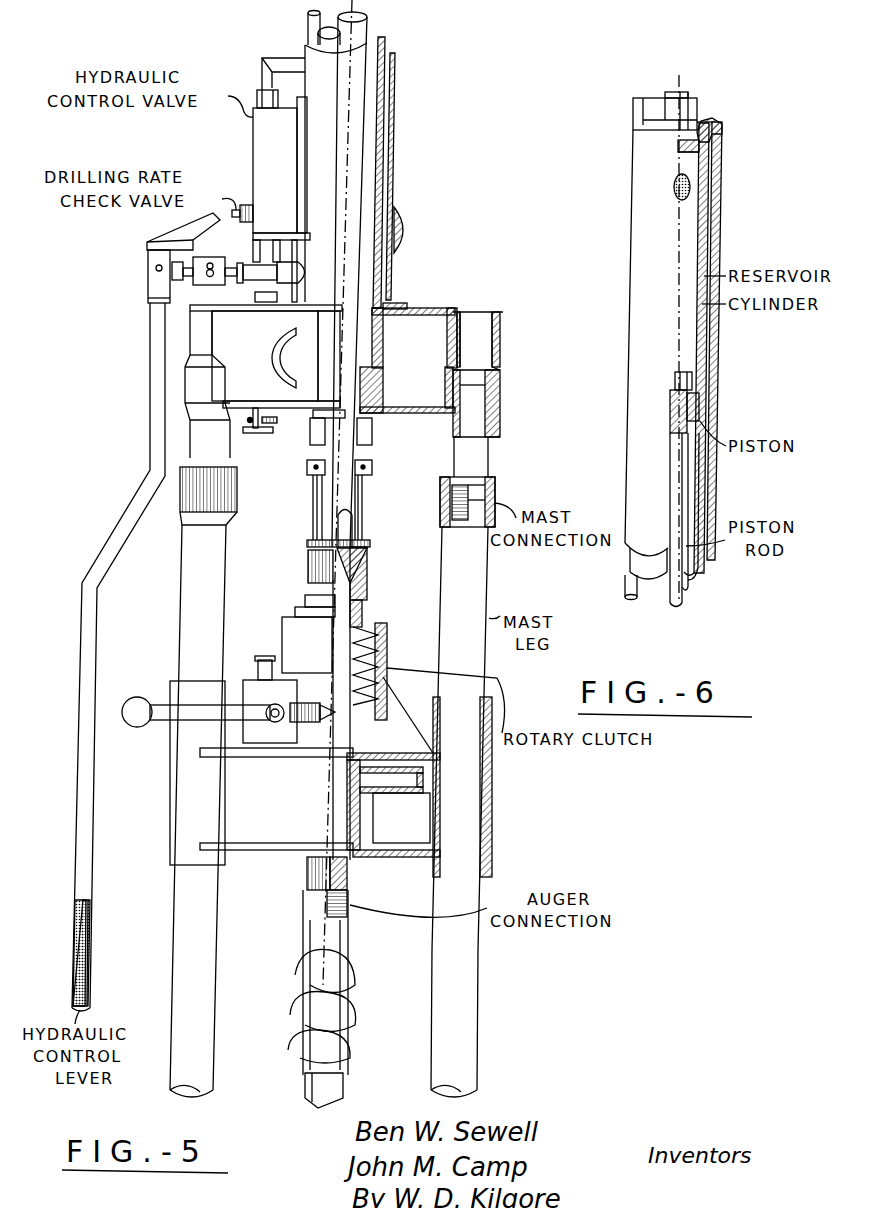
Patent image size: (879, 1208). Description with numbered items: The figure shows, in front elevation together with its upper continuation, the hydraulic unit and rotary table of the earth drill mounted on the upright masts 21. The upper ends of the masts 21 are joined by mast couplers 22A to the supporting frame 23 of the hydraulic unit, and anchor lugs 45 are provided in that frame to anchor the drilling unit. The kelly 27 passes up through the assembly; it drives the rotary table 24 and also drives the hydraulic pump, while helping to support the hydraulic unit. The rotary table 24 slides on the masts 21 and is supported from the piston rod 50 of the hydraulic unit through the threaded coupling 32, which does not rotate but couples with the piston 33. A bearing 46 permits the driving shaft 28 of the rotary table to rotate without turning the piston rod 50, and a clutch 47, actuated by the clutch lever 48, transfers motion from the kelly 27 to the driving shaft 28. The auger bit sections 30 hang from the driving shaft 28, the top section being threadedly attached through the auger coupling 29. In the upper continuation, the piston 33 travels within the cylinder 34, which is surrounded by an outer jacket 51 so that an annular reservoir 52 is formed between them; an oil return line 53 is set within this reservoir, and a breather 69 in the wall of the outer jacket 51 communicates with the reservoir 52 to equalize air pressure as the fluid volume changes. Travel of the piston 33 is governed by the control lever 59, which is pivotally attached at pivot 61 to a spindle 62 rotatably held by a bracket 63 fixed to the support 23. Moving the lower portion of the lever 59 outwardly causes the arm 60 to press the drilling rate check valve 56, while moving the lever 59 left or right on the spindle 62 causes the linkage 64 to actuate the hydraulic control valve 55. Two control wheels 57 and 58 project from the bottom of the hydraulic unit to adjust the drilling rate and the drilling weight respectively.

In FIG. 5, the upright masts 21 is at (183, 588).
In FIG. 5, the mast couplers 22A is at (238, 491).
In FIG. 5, the supporting frame 23 is at (425, 311).
In FIG. 5, the rotary table 24 is at (397, 868).
In FIG. 5, the kelly 27 is at (347, 1086).
In FIG. 5, the driving shaft 28 is at (348, 866).
In FIG. 5, the auger coupling 29 is at (306, 871).
In FIG. 5, the auger bit sections 30 is at (350, 1006).
In FIG. 5, the threaded coupling 32 is at (307, 566).
In FIG. 6, the piston 33 is at (700, 408).
In FIG. 5, the cylinder 34 is at (388, 40).
In FIG. 6, the cylinder 34 is at (705, 343).
In FIG. 5, the anchor lugs 45 is at (276, 355).
In FIG. 5, the bearing 46 is at (387, 660).
In FIG. 5, the clutch 47 is at (393, 800).
In FIG. 5, the clutch lever 48 is at (139, 700).
In FIG. 5, the piston rod 50 is at (370, 102).
In FIG. 6, the piston rod 50 is at (686, 493).
In FIG. 5, the outer jacket 51 is at (395, 68).
In FIG. 6, the outer jacket 51 is at (722, 215).
In FIG. 6, the annular reservoir 52 is at (714, 196).
In FIG. 5, the oil return line 53 is at (307, 25).
In FIG. 6, the oil return line 53 is at (624, 586).
In FIG. 5, the hydraulic control valve 55 is at (252, 144).
In FIG. 5, the drilling rate check valve 56 is at (246, 206).
In FIG. 5, the control wheel 57 is at (265, 436).
In FIG. 5, the control wheel 58 is at (278, 424).
In FIG. 5, the control lever 59 is at (76, 855).
In FIG. 5, the arm 60 is at (165, 236).
In FIG. 5, the pivot 61 is at (149, 282).
In FIG. 5, the spindle 62 is at (210, 258).
In FIG. 5, the bracket 63 is at (229, 309).
In FIG. 5, the linkage 64 is at (285, 256).
In FIG. 6, the breather 69 is at (674, 196).